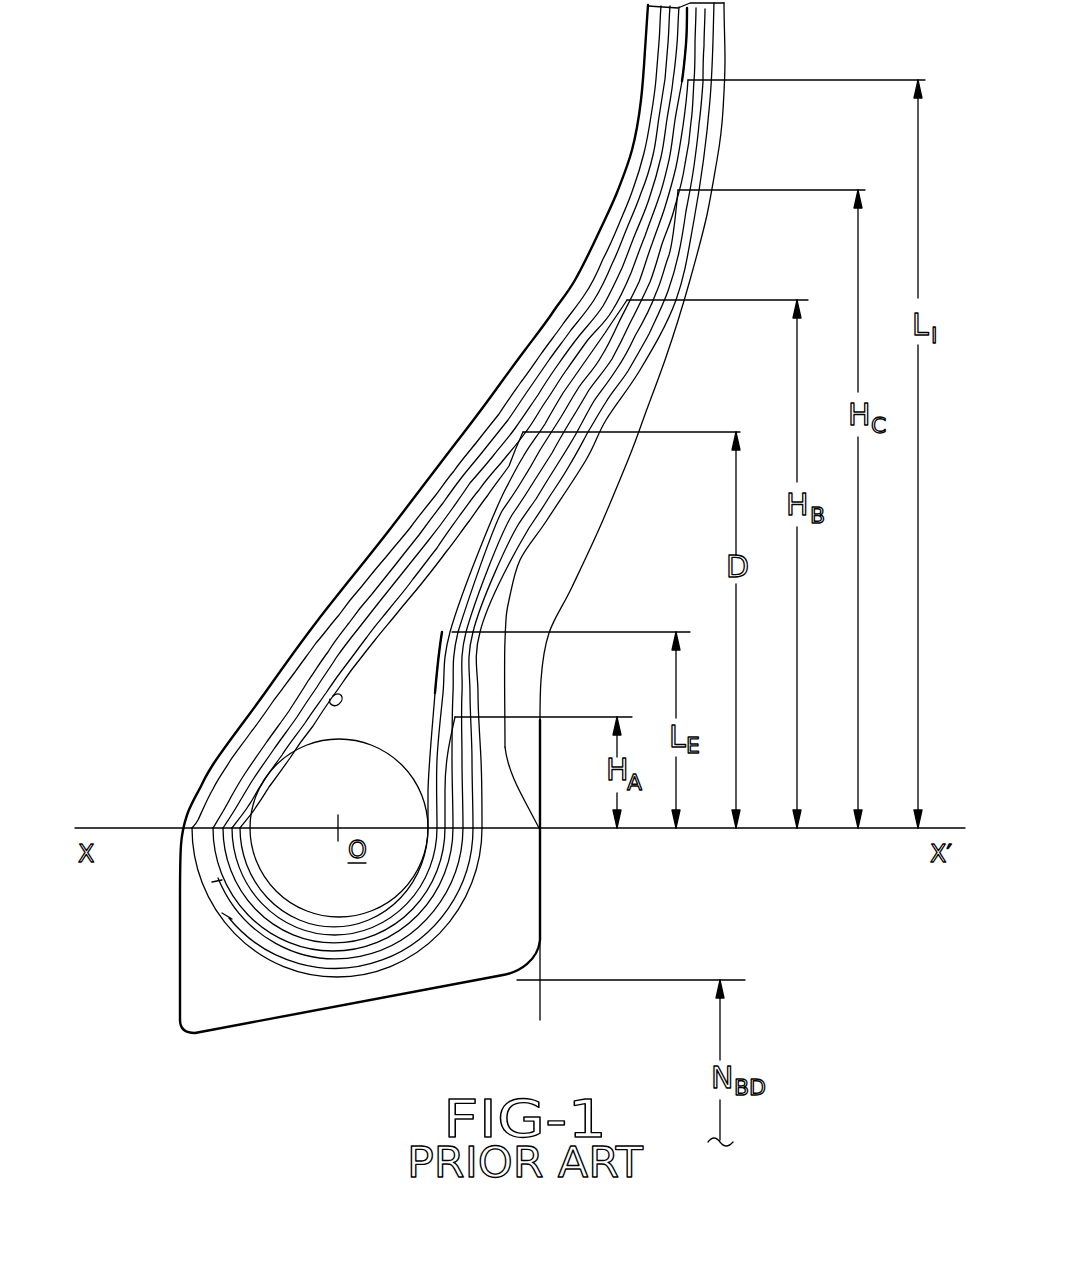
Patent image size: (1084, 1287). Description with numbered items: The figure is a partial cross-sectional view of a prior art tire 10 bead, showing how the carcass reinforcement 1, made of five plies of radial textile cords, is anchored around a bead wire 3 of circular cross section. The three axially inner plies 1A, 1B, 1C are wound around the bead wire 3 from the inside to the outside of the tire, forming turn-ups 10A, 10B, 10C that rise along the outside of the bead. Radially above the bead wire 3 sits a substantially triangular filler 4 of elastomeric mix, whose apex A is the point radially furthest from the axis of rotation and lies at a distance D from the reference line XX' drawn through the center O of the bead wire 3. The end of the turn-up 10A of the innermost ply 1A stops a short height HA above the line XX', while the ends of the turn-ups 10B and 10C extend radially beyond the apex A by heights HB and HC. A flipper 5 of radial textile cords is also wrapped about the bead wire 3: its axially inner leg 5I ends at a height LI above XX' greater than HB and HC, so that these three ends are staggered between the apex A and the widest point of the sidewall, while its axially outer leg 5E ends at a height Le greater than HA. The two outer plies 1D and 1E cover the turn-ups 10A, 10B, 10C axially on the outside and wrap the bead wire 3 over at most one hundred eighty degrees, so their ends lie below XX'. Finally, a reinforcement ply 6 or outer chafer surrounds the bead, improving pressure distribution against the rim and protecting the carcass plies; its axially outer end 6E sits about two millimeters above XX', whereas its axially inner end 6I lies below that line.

The carcass reinforcement 1 is at (688, 50).
The inner carcass ply 1A is at (660, 137).
The inner carcass ply 1B is at (632, 215).
The inner carcass ply 1C is at (605, 290).
The outer carcass ply 1D is at (672, 235).
The outer carcass ply 1E is at (705, 120).
The bead wire 3 is at (290, 808).
The filler 4 is at (378, 688).
The flipper 5 is at (326, 700).
The axially inner leg of the flipper 5I is at (445, 523).
The axially outer leg of the flipper 5E is at (441, 632).
The reinforcement ply 6 is at (335, 975).
The axially inner end of the chafer 6I is at (240, 940).
The axially outer end of the chafer 6E is at (483, 812).
The tire 10 is at (312, 356).
The turn-up 10A is at (445, 885).
The turn-up 10B is at (590, 360).
The turn-up 10C is at (470, 545).
The apex of the filler A is at (523, 428).